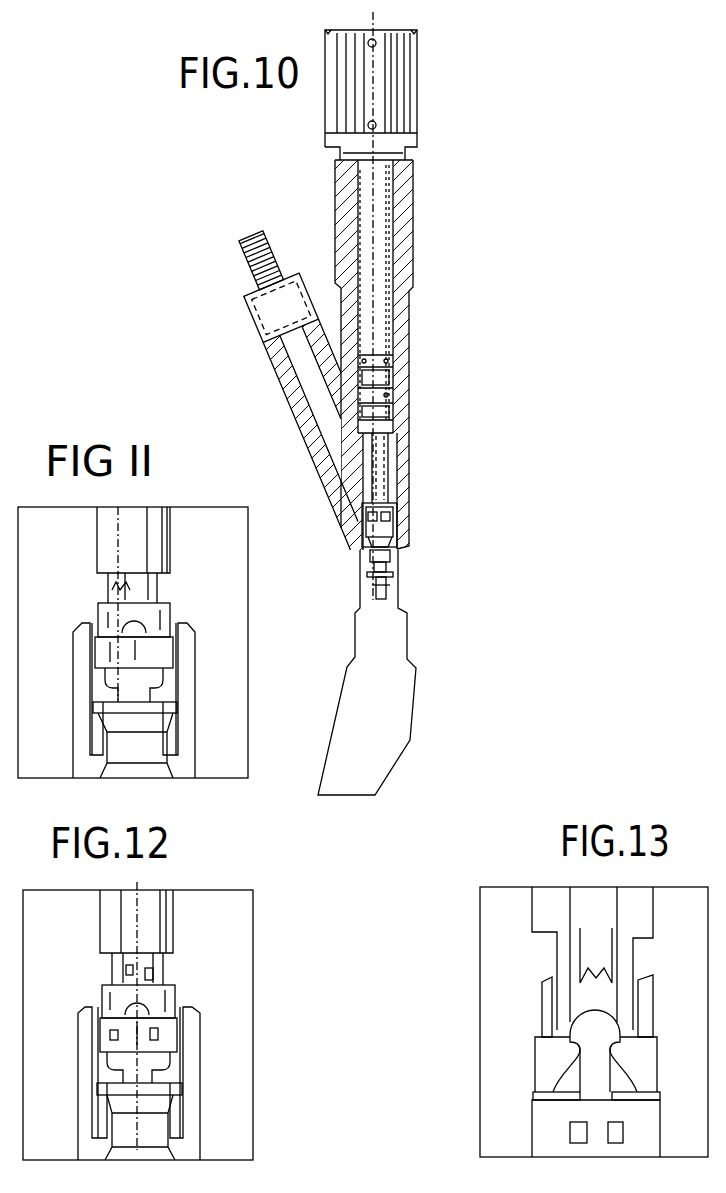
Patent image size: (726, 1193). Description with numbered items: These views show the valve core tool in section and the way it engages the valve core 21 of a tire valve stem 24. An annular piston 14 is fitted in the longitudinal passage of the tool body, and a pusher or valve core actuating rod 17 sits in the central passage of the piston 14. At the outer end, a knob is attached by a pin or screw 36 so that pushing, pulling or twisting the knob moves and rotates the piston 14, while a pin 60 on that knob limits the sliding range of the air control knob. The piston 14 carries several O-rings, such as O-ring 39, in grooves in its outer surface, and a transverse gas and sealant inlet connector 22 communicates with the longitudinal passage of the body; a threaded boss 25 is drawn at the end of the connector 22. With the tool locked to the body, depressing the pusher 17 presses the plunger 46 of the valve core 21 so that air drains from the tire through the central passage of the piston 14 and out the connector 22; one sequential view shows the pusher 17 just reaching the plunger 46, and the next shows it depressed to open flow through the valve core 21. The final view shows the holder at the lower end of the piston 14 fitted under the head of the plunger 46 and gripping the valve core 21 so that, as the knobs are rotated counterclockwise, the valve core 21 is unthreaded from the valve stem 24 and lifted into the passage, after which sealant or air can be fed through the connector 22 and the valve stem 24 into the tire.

In FIG. 10, the annular piston 14 is at (387, 303).
In FIG. 11, the annular piston 14 is at (95, 553).
In FIG. 11, the pusher or valve core actuating rod 17 is at (105, 591).
In FIG. 12, the pusher or valve core actuating rod 17 is at (177, 987).
In FIG. 13, the pusher or valve core actuating rod 17 is at (603, 953).
In FIG. 10, the valve core 21 is at (385, 563).
In FIG. 11, the valve core 21 is at (125, 687).
In FIG. 12, the valve core 21 is at (183, 1023).
In FIG. 13, the valve core 21 is at (605, 1027).
In FIG. 10, the gas and sealant inlet connector 22 is at (287, 398).
In FIG. 10, the valve stem 24 is at (400, 595).
In FIG. 11, the valve stem 24 is at (190, 680).
In FIG. 12, the valve stem 24 is at (192, 1050).
In FIG. 10, the boss 25 is at (258, 323).
In FIG. 10, the pin or screw 36 is at (378, 119).
In FIG. 10, the O-ring 39 is at (383, 378).
In FIG. 12, the plunger 46 is at (163, 1123).
In FIG. 10, the pin 60 is at (376, 45).